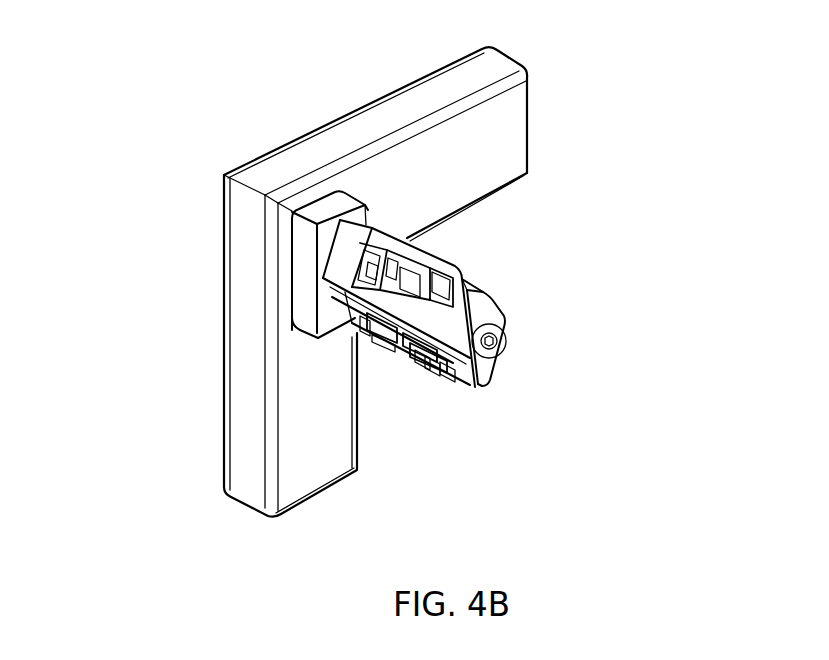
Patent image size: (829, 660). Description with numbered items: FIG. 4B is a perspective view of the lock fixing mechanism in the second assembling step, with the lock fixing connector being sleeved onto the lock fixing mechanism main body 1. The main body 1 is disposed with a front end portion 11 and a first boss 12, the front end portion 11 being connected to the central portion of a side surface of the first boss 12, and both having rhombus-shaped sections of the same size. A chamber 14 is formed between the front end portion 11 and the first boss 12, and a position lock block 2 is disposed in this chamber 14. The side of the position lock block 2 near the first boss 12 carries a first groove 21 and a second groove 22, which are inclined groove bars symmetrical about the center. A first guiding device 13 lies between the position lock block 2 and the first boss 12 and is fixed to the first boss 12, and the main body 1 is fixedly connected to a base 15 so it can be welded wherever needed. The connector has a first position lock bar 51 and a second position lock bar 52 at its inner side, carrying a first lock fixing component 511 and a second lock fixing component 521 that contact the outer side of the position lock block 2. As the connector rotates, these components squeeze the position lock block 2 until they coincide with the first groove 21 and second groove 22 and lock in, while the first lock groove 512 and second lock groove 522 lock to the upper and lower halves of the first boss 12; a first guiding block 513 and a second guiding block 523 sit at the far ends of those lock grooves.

The lock fixing mechanism main body 1 is at (495, 305).
The position lock block 2 is at (447, 287).
The front end portion 11 is at (463, 300).
The first boss 12 is at (390, 268).
The first guiding device 13 is at (445, 270).
The chamber 14 is at (340, 250).
The base 15 is at (372, 264).
The first groove 21 is at (446, 375).
The second groove 22 is at (431, 367).
The first position lock bar 51 is at (413, 262).
The second position lock bar 52 is at (407, 352).
The first lock fixing component 511 is at (433, 262).
The first lock groove 512 is at (402, 275).
The first guiding block 513 is at (362, 228).
The second lock fixing component 521 is at (423, 363).
The second lock groove 522 is at (377, 347).
The second guiding block 523 is at (363, 330).